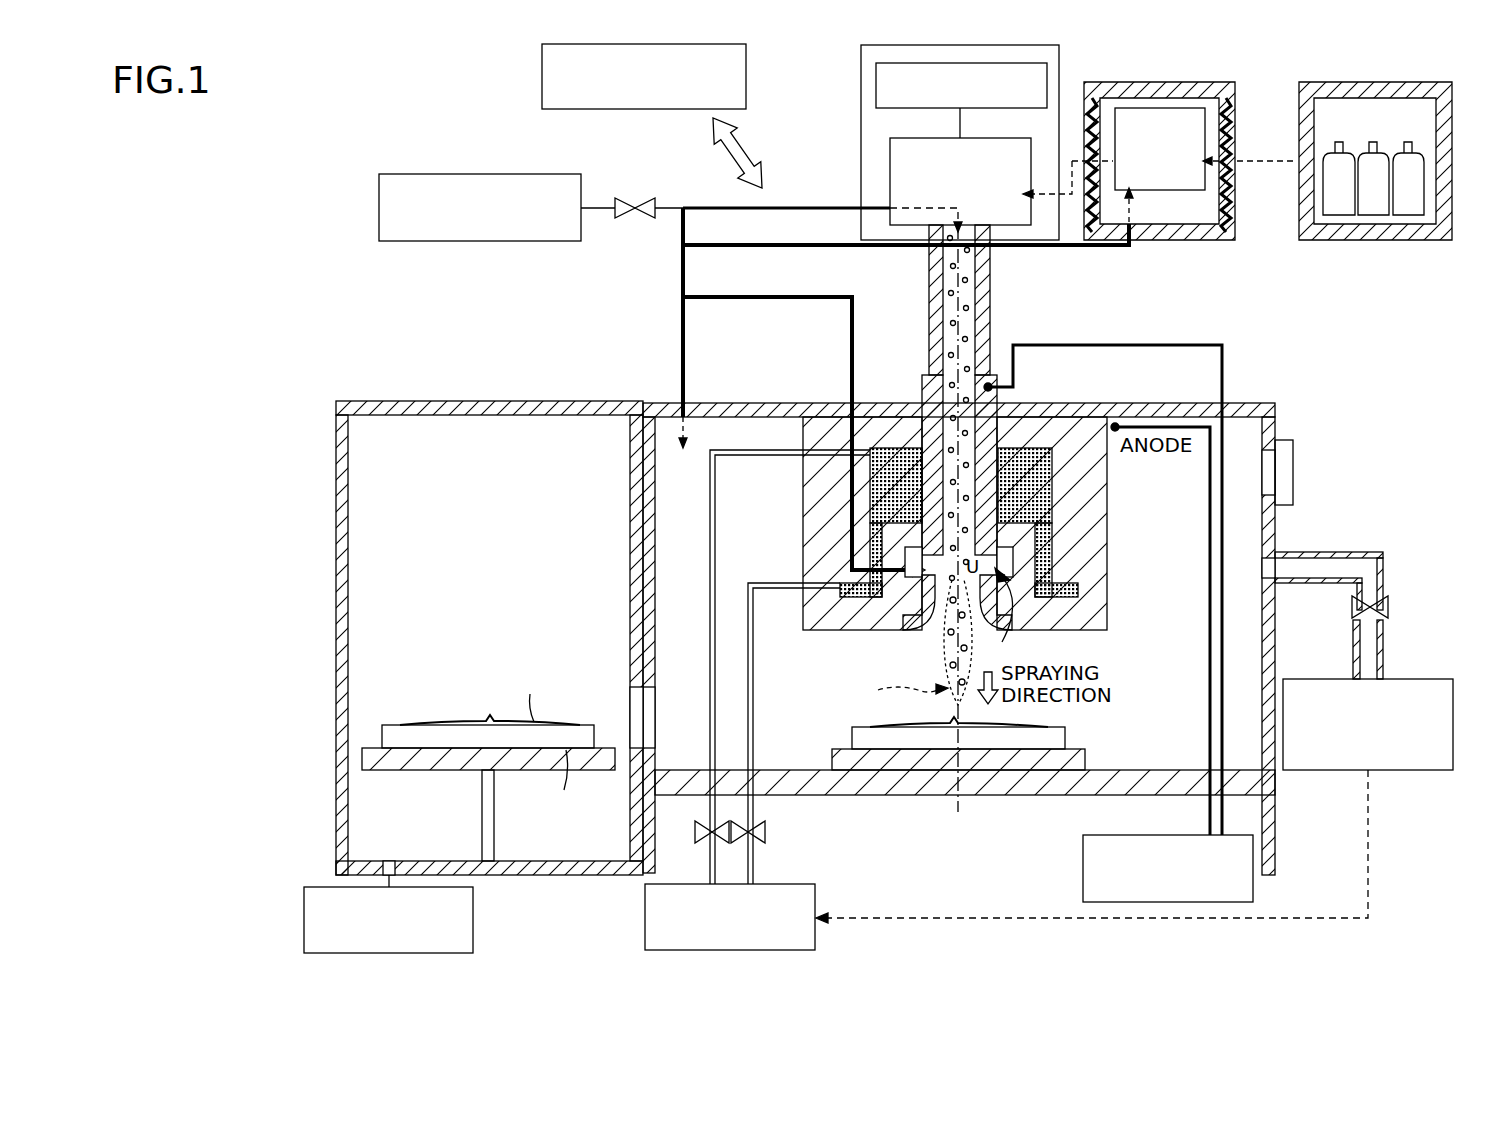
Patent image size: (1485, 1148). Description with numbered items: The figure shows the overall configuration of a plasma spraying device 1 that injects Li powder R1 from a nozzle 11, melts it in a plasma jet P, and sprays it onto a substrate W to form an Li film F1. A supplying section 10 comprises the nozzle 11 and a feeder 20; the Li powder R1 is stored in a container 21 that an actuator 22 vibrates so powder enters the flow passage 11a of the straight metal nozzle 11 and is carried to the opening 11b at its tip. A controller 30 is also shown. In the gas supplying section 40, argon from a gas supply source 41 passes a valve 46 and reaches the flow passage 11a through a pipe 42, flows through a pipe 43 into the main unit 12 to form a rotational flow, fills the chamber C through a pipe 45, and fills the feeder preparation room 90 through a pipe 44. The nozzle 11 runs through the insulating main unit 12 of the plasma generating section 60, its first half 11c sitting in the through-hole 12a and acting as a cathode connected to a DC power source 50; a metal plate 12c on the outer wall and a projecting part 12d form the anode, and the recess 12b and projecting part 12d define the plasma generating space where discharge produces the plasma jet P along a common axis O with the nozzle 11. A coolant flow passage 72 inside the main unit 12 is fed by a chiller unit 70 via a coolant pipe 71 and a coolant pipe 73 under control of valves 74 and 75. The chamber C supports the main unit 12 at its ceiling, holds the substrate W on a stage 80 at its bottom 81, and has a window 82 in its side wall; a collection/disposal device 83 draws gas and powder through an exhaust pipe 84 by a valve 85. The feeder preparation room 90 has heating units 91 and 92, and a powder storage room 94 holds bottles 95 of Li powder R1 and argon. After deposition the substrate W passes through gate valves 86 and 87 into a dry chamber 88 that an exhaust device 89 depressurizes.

The plasma spraying device 1 is at (356, 71).
The supplying section 10 is at (947, 518).
The nozzle 11 is at (937, 390).
The flow passage 11a is at (940, 322).
The opening 11b is at (934, 602).
The first half 11c is at (932, 396).
The main unit 12 is at (990, 514).
The through-hole 12a is at (1004, 418).
The recess 12b is at (1034, 538).
The metal plate 12c is at (1115, 422).
The projecting part 12d is at (1089, 628).
The feeder 20 is at (940, 140).
The container 21 is at (890, 157).
The actuator 22 is at (876, 88).
The controller 30 is at (542, 78).
The gas supplying section 40 is at (668, 274).
The gas supply source 41 is at (530, 174).
The pipe 42 is at (785, 206).
The pipe 43 is at (799, 296).
The pipe 44 is at (1094, 248).
The pipe 45 is at (684, 352).
The valve 46 is at (638, 198).
The DC power source 50 is at (1160, 835).
The plasma generating section 60 is at (1011, 615).
The chiller unit 70 is at (775, 884).
The coolant pipe 71 is at (770, 590).
The coolant flow passage 72 is at (1058, 502).
The coolant pipe 73 is at (764, 454).
The valve 74 is at (766, 830).
The valve 75 is at (698, 834).
The stage 80 is at (1084, 763).
The bottom 81 is at (1275, 786).
The window 82 is at (1293, 476).
The collection/disposal device 83 is at (1332, 678).
The exhaust pipe 84 is at (1318, 552).
The valve 85 is at (1352, 608).
The gate valve 86 is at (655, 698).
The gate valve 87 is at (630, 698).
The dry chamber 88 is at (489, 624).
The exhaust device 89 is at (473, 921).
The feeder preparation room 90 is at (1184, 141).
The heating unit 91 is at (1226, 98).
The heating unit 92 is at (1092, 98).
The powder storage room 94 is at (1375, 147).
The bottles 95 is at (1408, 142).
The Li powder R1 is at (1000, 268).
The Li film F1 is at (1012, 726).
The substrate W is at (1065, 740).
The chamber C is at (1240, 396).
The plasma jet P is at (948, 677).
The common axis O is at (957, 819).